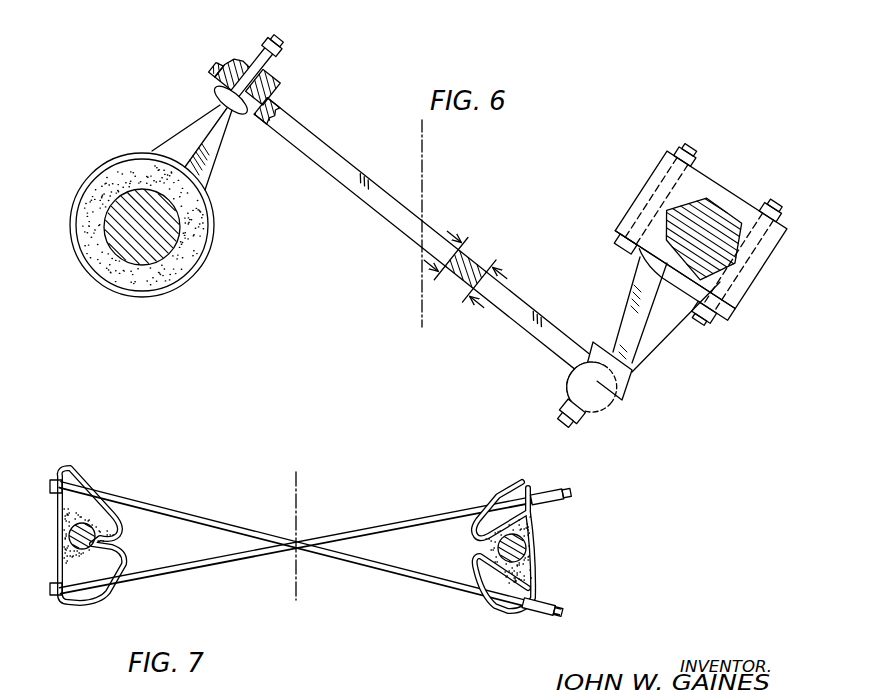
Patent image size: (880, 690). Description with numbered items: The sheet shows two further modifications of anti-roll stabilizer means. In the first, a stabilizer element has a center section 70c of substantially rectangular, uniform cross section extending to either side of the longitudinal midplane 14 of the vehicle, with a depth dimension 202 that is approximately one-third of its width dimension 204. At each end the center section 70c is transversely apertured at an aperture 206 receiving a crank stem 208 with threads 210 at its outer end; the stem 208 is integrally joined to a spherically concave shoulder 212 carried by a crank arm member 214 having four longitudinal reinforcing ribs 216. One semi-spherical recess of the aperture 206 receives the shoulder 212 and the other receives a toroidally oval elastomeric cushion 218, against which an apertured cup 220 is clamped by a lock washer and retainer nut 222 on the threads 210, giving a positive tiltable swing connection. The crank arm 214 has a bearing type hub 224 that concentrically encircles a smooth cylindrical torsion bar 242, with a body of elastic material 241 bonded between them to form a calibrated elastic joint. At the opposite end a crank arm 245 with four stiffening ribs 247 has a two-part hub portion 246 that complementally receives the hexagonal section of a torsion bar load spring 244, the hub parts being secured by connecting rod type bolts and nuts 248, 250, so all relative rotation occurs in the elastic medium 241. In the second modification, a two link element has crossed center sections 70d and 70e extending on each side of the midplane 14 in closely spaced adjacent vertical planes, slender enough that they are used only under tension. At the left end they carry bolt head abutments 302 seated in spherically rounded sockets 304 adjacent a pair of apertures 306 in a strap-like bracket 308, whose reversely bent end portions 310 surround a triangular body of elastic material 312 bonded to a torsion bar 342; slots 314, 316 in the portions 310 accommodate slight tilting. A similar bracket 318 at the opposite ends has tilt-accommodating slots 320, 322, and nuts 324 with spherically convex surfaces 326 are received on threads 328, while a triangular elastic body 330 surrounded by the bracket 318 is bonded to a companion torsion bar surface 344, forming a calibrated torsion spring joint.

In FIG. 6, the longitudinal midplane 14 is at (424, 145).
In FIG. 7, the longitudinal midplane 14 is at (297, 510).
In FIG. 6, the center section 70c is at (424, 236).
In FIG. 7, the center section 70d is at (363, 527).
In FIG. 7, the center section 70e is at (353, 557).
In FIG. 6, the depth dimension 202 is at (503, 297).
In FIG. 6, the width dimension 204 is at (450, 288).
In FIG. 6, the aperture 206 is at (234, 54).
In FIG. 6, the crank stem 208 is at (250, 62).
In FIG. 6, the threads 210 is at (272, 54).
In FIG. 6, the spherically concave shoulder 212 is at (236, 122).
In FIG. 6, the crank arm member 214 is at (210, 180).
In FIG. 6, the longitudinal reinforcing ribs 216 is at (193, 142).
In FIG. 6, the cushion 218 is at (274, 88).
In FIG. 6, the apertured cup 220 is at (274, 80).
In FIG. 6, the retainer nut 222 is at (256, 66).
In FIG. 6, the bearing type hub 224 is at (164, 232).
In FIG. 6, the body of elastic material 241 is at (98, 263).
In FIG. 6, the torsion bar 242 is at (160, 258).
In FIG. 6, the torsion bar load spring 244 is at (700, 237).
In FIG. 6, the crank arm 245 is at (645, 316).
In FIG. 6, the clamp body 246 is at (696, 236).
In FIG. 6, the stiffening ribs 247 is at (636, 318).
In FIG. 6, the bolts 248 is at (735, 289).
In FIG. 6, the nuts 250 is at (699, 227).
In FIG. 7, the bolt head abutments 302 is at (109, 532).
In FIG. 7, the sockets 304 is at (55, 543).
In FIG. 7, the apertures 306 is at (50, 497).
In FIG. 7, the bracket 308 is at (52, 550).
In FIG. 7, the reversely bent end portions 310 is at (311, 553).
In FIG. 7, the body of elastic material 312 is at (119, 536).
In FIG. 7, the slot 314 is at (100, 592).
In FIG. 7, the slot 316 is at (110, 467).
In FIG. 7, the bracket 318 is at (510, 534).
In FIG. 7, the slot 320 is at (492, 603).
In FIG. 7, the slot 322 is at (497, 497).
In FIG. 7, the nuts 324 is at (572, 550).
In FIG. 7, the spherically convex surface 326 is at (532, 490).
In FIG. 7, the threads 328 is at (568, 496).
In FIG. 7, the body of elastic material 330 is at (507, 550).
In FIG. 7, the torsion bar 342 is at (113, 556).
In FIG. 7, the torsion bar surface 344 is at (482, 542).